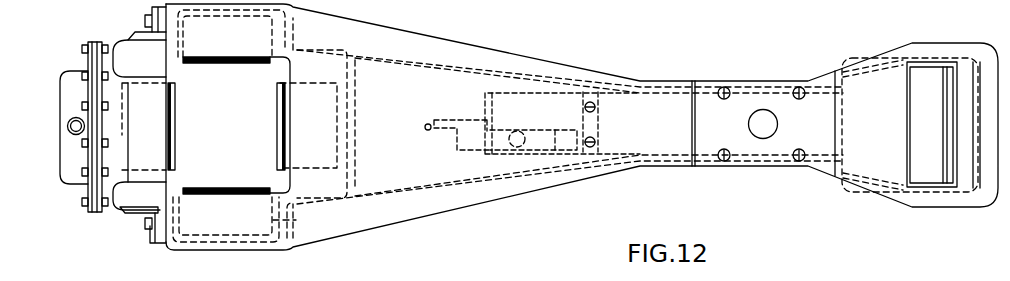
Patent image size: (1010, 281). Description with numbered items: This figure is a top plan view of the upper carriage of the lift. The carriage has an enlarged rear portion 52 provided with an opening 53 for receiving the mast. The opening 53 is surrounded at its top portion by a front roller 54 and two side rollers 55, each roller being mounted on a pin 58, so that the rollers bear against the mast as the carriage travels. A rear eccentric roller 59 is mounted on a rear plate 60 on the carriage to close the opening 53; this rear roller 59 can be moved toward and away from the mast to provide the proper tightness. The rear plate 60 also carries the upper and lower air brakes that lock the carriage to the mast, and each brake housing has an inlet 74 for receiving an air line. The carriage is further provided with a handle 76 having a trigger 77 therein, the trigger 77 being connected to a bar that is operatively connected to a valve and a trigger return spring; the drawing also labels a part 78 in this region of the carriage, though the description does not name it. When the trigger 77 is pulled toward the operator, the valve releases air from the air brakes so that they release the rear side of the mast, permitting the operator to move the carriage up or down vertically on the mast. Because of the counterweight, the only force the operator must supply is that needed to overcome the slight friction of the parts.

The enlarged rear portion 52 is at (300, 246).
The opening 53 is at (250, 150).
The front roller 54 is at (277, 128).
The side rollers 55 is at (217, 64).
The pin 58 is at (296, 220).
The rear eccentric roller 59 is at (177, 118).
The rear plate 60 is at (124, 213).
The inlet 74 is at (67, 132).
The handle 76 is at (972, 200).
The trigger 77 is at (945, 118).
The partition plate 78 is at (660, 167).